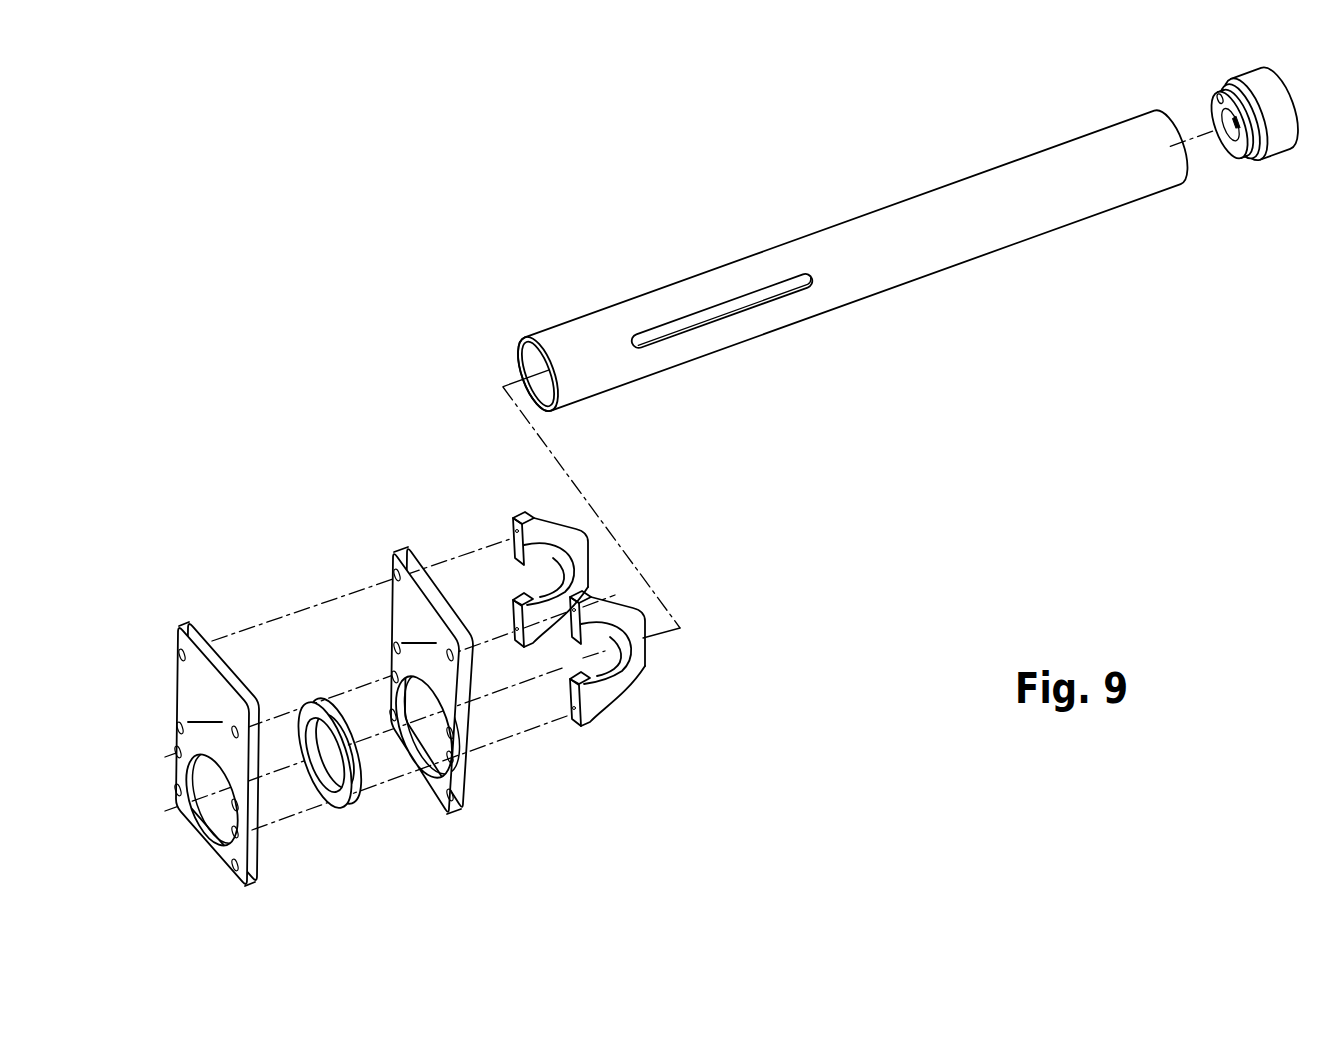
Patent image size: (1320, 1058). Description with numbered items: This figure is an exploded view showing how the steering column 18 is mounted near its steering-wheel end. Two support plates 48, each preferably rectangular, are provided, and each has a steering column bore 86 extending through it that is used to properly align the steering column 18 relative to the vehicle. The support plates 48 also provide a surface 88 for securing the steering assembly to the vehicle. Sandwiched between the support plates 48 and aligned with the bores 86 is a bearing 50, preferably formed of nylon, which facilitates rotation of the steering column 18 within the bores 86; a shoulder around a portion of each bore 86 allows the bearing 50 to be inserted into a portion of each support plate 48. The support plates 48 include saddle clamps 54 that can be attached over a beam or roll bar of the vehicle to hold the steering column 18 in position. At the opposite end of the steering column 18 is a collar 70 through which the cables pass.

The steering column 18 is at (842, 220).
The support plate 48 is at (253, 848).
The bearing 50 is at (352, 806).
The saddle clamp 54 is at (562, 527).
The collar 70 is at (1256, 157).
The steering column bore 86 is at (193, 836).
The surface 88 is at (312, 667).